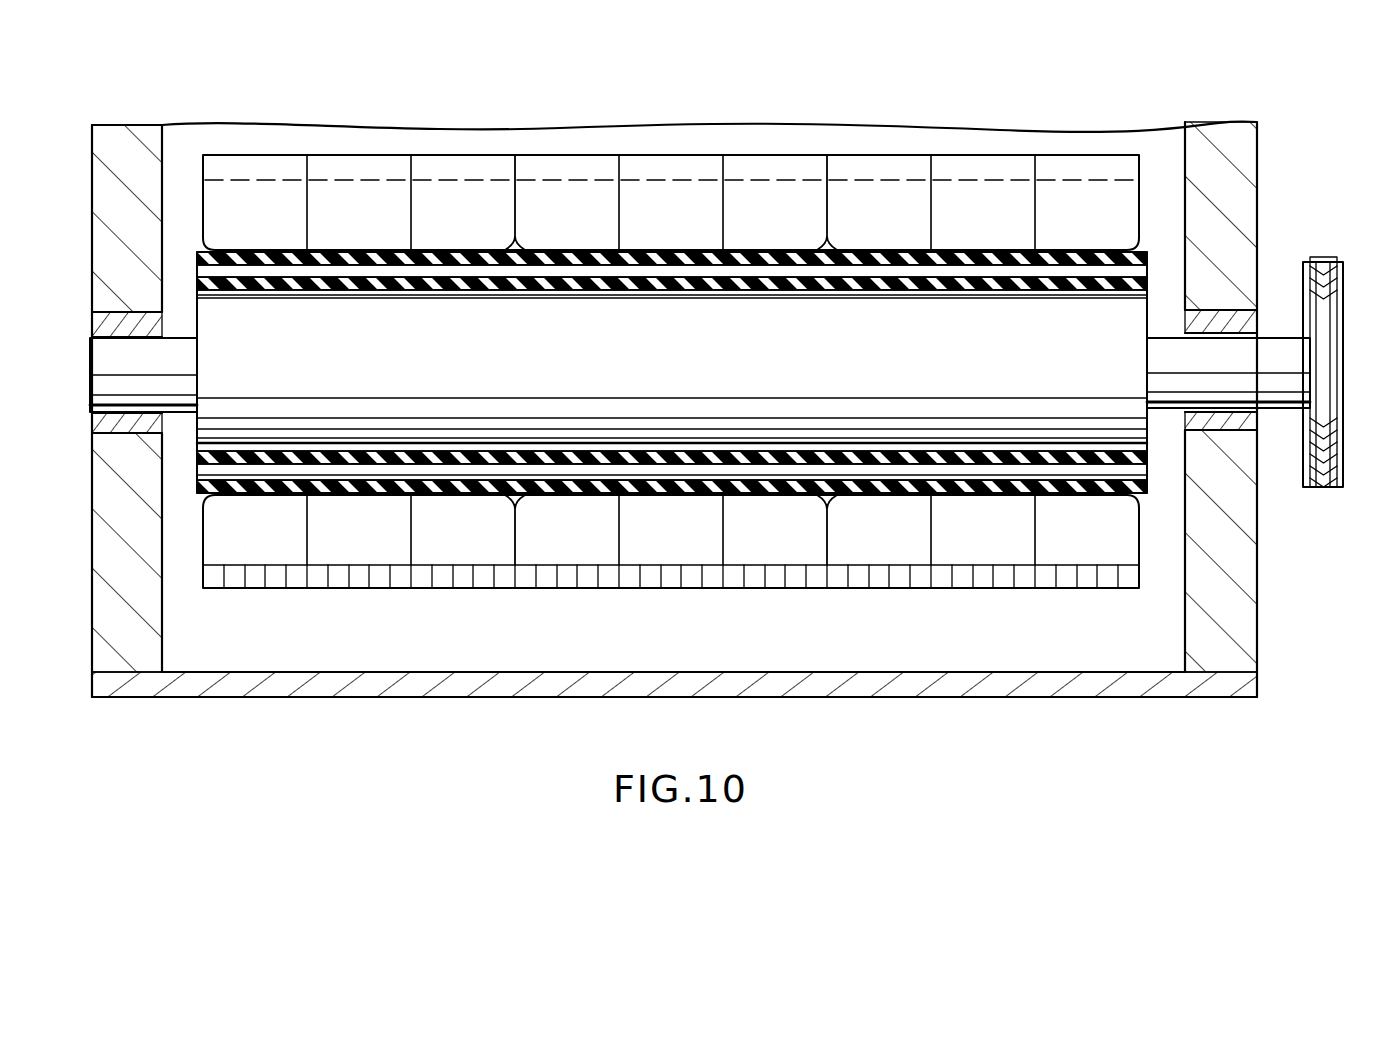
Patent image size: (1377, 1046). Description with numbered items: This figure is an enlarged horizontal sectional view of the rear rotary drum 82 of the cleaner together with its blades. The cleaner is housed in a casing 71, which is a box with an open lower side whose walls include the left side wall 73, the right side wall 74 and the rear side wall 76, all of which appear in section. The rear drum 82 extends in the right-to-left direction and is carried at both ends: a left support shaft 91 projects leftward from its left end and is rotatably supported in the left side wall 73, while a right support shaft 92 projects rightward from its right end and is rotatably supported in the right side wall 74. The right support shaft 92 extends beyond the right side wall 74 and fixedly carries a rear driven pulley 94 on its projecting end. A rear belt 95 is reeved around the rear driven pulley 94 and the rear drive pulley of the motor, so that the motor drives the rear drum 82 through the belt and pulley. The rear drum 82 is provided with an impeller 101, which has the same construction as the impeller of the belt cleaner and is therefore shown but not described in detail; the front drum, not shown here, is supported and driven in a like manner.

The casing 71 is at (671, 441).
The left side wall 73 is at (103, 566).
The right side wall 74 is at (1245, 566).
The rear side wall 76 is at (903, 686).
The rear rotary drum 82 is at (668, 384).
The left support shaft 91 is at (92, 369).
The right support shaft 92 is at (1280, 402).
The rear driven pulley 94 is at (1305, 344).
The rear belt 95 is at (1323, 258).
The impeller 101 is at (370, 599).